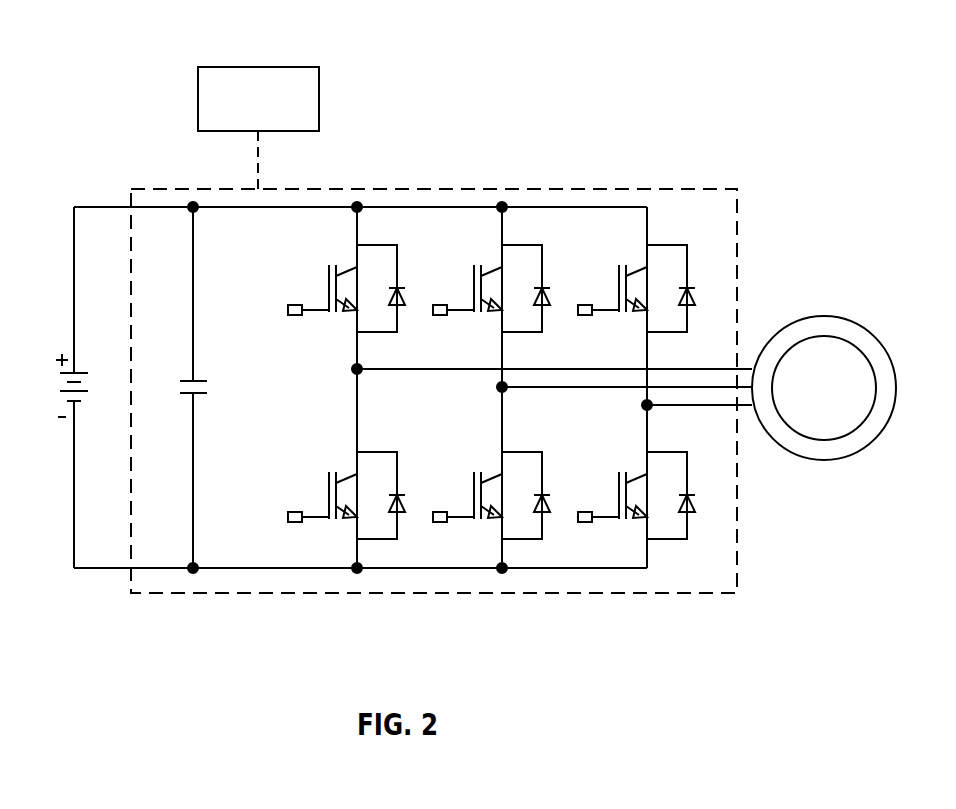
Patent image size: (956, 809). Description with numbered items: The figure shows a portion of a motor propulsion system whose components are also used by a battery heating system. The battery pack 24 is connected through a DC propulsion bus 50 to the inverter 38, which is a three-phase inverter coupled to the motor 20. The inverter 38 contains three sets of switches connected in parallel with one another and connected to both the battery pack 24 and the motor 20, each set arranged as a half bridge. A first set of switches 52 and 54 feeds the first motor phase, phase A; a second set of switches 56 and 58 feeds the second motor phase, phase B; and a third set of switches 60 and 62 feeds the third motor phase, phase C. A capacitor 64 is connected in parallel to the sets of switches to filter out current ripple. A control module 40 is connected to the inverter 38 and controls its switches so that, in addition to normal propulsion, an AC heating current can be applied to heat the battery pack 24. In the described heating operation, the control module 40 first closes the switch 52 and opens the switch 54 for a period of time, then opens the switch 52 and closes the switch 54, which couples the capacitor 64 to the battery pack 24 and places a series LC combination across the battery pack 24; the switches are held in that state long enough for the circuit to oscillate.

The motor 20 is at (826, 314).
The battery pack 24 is at (80, 372).
The inverter 38 is at (391, 604).
The control module 40 is at (262, 83).
The DC propulsion bus 50 is at (429, 205).
The switch 52 is at (346, 306).
The switch 54 is at (352, 477).
The switch 56 is at (490, 306).
The switch 58 is at (497, 477).
The switch 60 is at (635, 306).
The switch 62 is at (642, 477).
The capacitor 64 is at (197, 380).